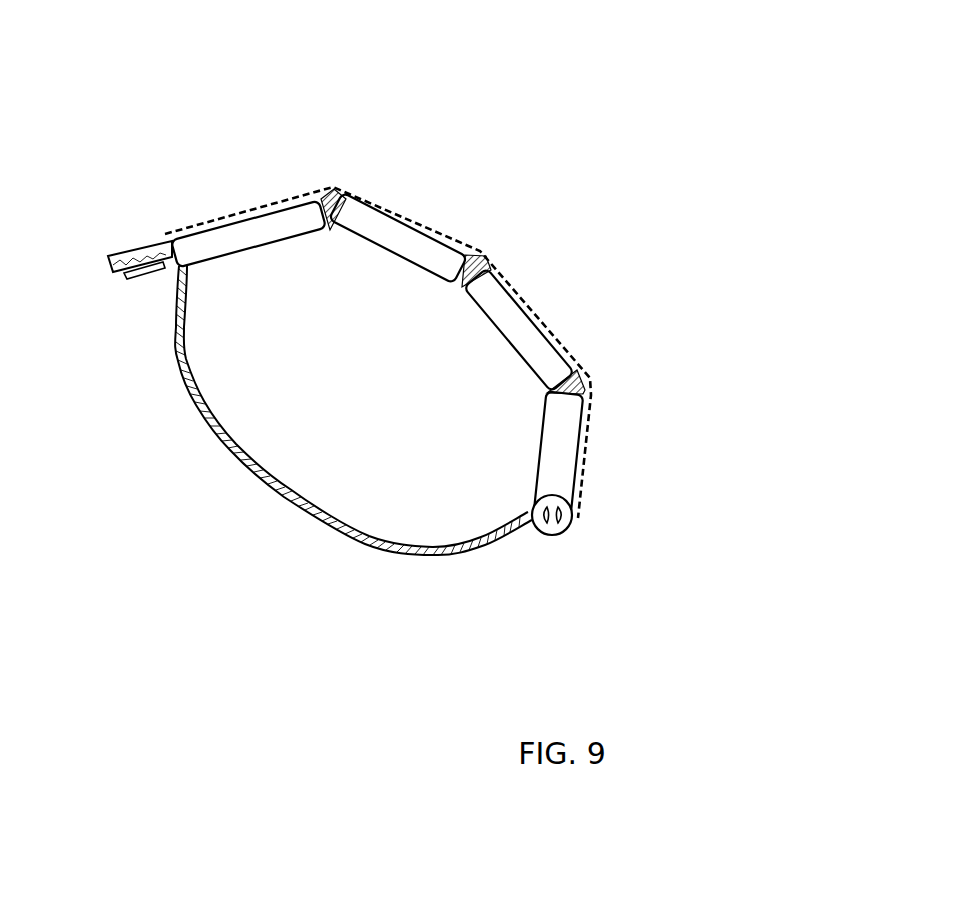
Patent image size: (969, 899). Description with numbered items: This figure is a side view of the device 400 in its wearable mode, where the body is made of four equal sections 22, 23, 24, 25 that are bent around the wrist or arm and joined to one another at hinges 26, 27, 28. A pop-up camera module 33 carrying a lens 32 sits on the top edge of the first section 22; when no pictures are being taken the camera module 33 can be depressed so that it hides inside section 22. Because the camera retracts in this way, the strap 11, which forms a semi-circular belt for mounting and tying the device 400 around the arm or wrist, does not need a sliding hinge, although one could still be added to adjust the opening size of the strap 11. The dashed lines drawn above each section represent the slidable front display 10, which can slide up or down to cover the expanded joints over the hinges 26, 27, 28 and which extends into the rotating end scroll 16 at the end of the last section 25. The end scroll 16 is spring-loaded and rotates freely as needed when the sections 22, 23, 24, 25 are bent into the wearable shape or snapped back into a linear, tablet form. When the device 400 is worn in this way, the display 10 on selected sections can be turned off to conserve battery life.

The device 400 is at (503, 86).
The display 10 is at (524, 290).
The strap 11 is at (238, 489).
The end scroll 16 is at (573, 521).
The section 22 is at (277, 247).
The section 23 is at (380, 257).
The section 24 is at (490, 328).
The section 25 is at (537, 437).
The hinge 26 is at (335, 188).
The hinge 27 is at (478, 250).
The hinge 28 is at (585, 382).
The lens 32 is at (142, 273).
The camera module 33 is at (138, 247).